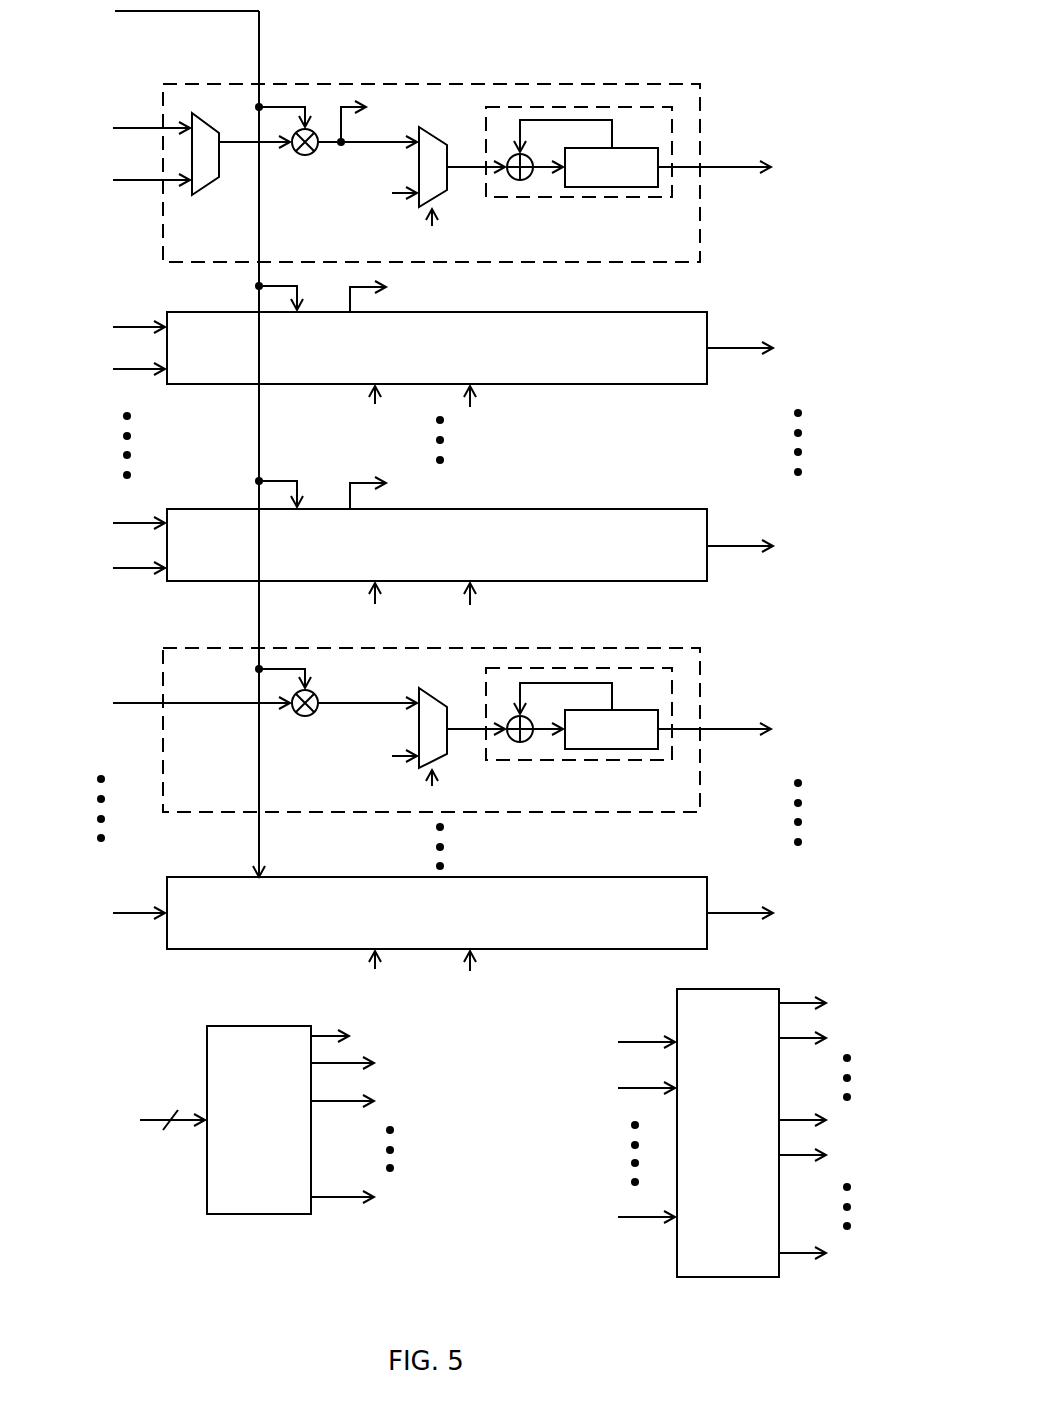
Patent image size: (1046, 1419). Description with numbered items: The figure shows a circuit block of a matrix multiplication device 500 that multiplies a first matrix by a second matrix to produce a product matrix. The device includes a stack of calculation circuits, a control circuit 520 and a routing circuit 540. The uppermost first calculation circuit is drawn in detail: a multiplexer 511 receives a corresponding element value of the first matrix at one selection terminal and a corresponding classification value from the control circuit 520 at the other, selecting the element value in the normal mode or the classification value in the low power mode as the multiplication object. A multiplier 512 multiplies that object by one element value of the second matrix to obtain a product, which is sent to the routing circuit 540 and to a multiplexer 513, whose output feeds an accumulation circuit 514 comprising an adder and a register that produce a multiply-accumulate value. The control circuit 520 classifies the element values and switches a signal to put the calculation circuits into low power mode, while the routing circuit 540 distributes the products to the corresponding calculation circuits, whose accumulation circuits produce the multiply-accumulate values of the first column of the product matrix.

The matrix multiplication device 500 is at (146, 1267).
The multiplexer 511 is at (205, 196).
The multiplier 512 is at (302, 156).
The multiplexer 513 is at (441, 112).
The accumulation circuit 514 is at (672, 128).
The control circuit 520 is at (258, 1214).
The routing circuit 540 is at (727, 1277).